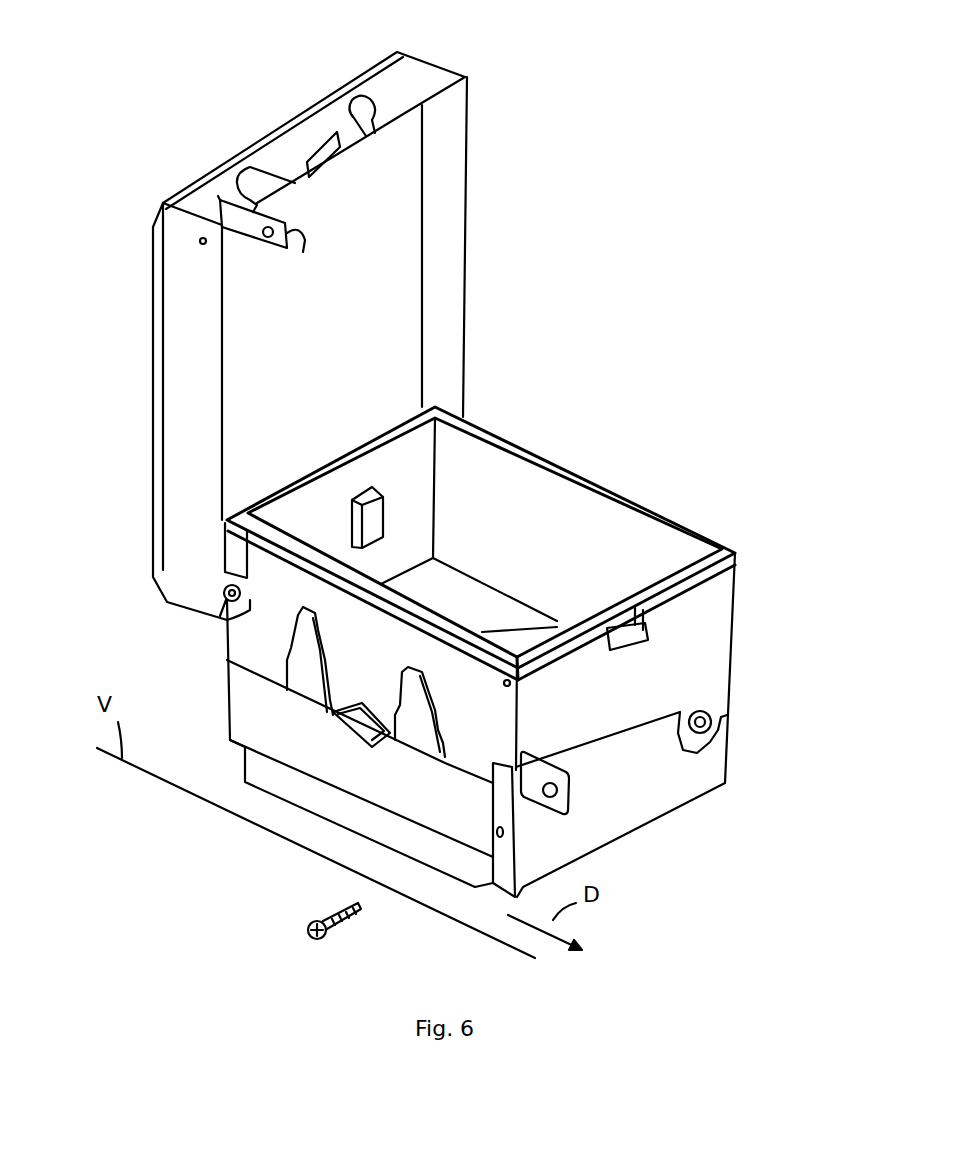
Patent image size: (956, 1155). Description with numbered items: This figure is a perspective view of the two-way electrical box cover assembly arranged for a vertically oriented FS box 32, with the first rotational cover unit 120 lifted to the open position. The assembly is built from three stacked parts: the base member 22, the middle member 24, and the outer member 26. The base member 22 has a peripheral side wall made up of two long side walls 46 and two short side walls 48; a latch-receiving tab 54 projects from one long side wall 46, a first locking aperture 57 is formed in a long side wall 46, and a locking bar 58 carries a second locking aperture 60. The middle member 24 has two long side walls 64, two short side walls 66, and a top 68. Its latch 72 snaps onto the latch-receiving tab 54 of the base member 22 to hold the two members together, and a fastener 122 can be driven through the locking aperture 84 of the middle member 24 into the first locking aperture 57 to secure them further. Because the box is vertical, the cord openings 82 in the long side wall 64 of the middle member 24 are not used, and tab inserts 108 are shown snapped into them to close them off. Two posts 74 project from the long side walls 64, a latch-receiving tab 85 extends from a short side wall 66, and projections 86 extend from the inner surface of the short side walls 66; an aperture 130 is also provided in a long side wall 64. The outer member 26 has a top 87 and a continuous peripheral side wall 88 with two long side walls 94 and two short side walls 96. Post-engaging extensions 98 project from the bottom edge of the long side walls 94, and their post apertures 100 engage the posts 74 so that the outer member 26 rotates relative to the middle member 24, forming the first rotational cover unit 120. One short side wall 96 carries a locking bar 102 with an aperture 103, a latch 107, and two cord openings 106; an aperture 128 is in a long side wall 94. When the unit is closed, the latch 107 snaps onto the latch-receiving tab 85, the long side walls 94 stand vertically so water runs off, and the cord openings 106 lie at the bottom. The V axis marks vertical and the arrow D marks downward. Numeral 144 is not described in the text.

The base member 22 is at (705, 778).
The middle member 24 is at (705, 666).
The outer member 26 is at (400, 313).
The FS box 32 is at (324, 807).
The long side walls 46 is at (266, 702).
The short side walls 48 is at (664, 764).
The latch-receiving tab 54 is at (395, 746).
The first locking aperture 57 is at (516, 829).
The locking bar 58 is at (570, 808).
The second locking aperture 60 is at (566, 786).
The long side walls 64 is at (568, 528).
The short side walls 66 is at (703, 637).
The top 68 is at (592, 485).
The latch 72 is at (330, 713).
The posts 74 is at (223, 610).
The cord openings 82 is at (399, 689).
The locking aperture 84 is at (492, 825).
The latch-receiving tab 85 is at (640, 642).
The projections 86 is at (350, 512).
The top 87 is at (354, 351).
The continuous peripheral side wall 88 is at (197, 393).
The long side walls 94 is at (212, 351).
The short side walls 96 is at (290, 169).
The post-engaging extensions 98 is at (245, 619).
The post apertures 100 is at (241, 594).
The locking bar 102 is at (313, 251).
The aperture 103 is at (265, 237).
The cord openings 106 is at (250, 182).
The latch 107 is at (340, 132).
The tab insert 108 is at (320, 688).
The first rotational cover unit 120 is at (493, 236).
The fastener 122 is at (342, 922).
The aperture 128 is at (200, 246).
The aperture 130 is at (505, 688).
The plate 144 is at (349, 740).